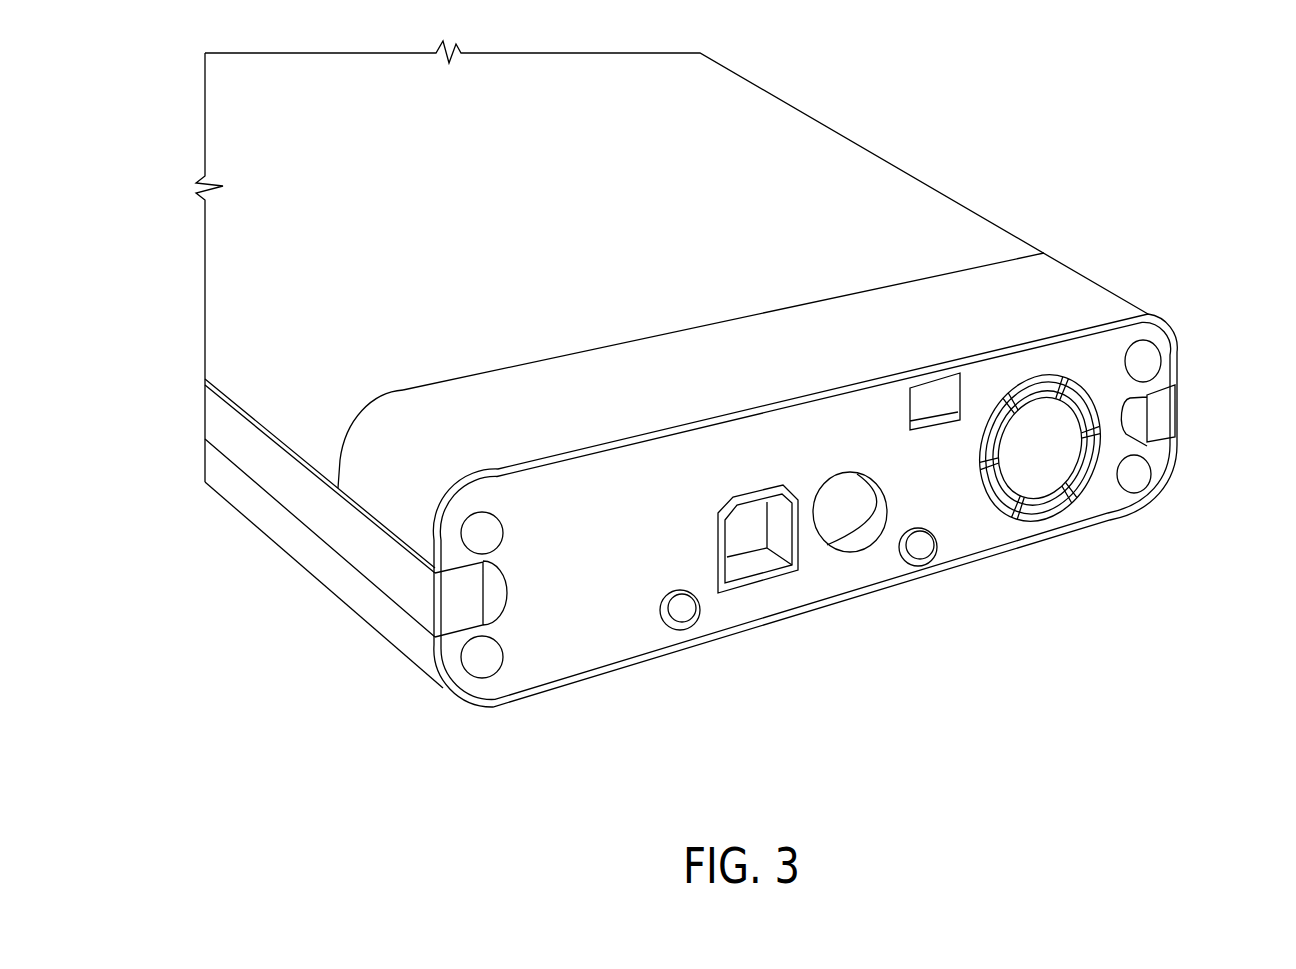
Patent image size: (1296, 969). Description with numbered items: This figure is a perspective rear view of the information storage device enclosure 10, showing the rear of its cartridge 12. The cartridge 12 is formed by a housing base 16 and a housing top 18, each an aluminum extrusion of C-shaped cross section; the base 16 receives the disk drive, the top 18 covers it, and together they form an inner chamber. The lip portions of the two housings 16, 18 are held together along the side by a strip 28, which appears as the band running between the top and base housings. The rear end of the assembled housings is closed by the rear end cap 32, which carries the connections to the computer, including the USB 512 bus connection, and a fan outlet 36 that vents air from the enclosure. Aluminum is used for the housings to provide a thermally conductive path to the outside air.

The information storage device enclosure 10 is at (386, 735).
The cartridge 12 is at (1062, 157).
The housing base 16 is at (328, 580).
The housing top 18 is at (877, 178).
The strip 28 is at (293, 502).
The rear end cap 32 is at (1110, 513).
The fan outlet 36 is at (1178, 350).
The USB bus 512 is at (757, 558).